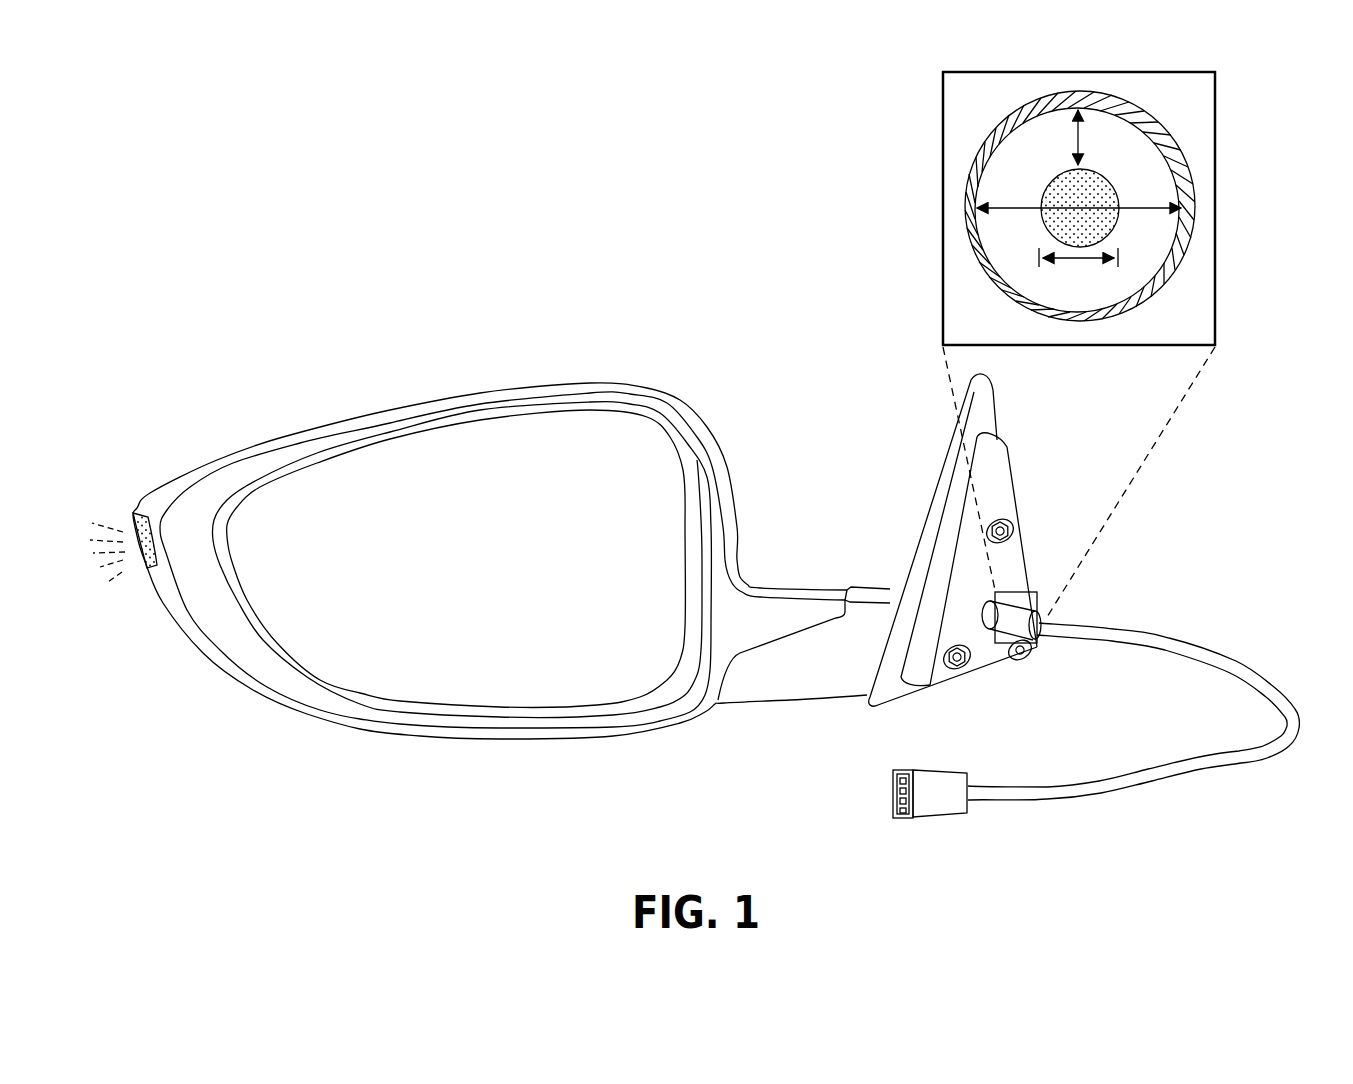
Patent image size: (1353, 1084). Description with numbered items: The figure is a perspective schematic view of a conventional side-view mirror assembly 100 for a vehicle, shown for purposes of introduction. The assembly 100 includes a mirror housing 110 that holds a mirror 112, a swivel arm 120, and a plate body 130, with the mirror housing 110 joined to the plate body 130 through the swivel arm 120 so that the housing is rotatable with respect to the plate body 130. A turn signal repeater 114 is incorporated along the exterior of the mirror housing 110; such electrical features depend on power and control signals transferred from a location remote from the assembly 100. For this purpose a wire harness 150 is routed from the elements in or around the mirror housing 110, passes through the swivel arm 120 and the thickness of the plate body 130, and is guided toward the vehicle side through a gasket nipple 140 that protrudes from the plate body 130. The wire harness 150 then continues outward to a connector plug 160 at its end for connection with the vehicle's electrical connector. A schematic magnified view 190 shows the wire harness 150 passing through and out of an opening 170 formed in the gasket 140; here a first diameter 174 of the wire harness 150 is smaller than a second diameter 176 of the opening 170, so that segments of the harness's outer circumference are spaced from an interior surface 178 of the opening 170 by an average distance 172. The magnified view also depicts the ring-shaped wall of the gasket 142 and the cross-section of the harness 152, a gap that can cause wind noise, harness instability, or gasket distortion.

The side-view mirror assembly 100 is at (296, 315).
The mirror housing 110 is at (415, 765).
The mirror 112 is at (460, 450).
The turn signal repeater 114 is at (109, 500).
The swivel arm 120 is at (783, 720).
The plate body 130 is at (1038, 470).
The gasket nipple 140 is at (1020, 585).
The grommet ring 142 is at (1005, 288).
The wire harness 150 is at (1212, 640).
The cable cross-section 152 is at (1093, 188).
The connector plug 160 is at (940, 800).
The opening 170 is at (1048, 655).
The average distance 172 is at (1080, 138).
The first diameter 174 is at (1080, 262).
The second diameter 176 is at (1018, 207).
The interior surface 178 is at (1012, 138).
The schematic magnified view 190 is at (1217, 273).